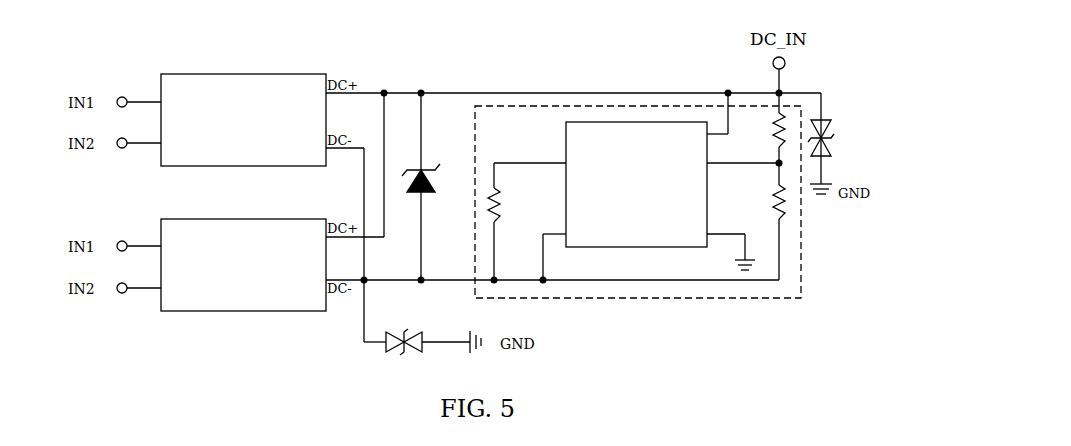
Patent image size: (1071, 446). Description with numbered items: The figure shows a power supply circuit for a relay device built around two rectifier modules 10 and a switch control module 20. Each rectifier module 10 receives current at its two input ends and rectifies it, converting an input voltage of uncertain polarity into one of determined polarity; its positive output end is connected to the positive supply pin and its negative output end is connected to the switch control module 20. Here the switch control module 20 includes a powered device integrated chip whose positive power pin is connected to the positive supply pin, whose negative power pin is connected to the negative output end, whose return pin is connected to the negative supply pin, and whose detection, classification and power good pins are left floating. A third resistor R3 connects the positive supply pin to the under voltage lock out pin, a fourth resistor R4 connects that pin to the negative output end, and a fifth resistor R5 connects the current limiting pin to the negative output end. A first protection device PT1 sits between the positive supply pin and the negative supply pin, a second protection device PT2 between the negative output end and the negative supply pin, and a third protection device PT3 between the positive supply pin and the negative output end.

The rectifier module 10 is at (243, 192).
The switch control module 20 is at (638, 195).
The third resistor R3 is at (765, 128).
The fourth resistor R4 is at (765, 221).
The fifth resistor R5 is at (506, 221).
The first protection device PT1 is at (839, 143).
The second protection device PT2 is at (417, 333).
The third protection device PT3 is at (426, 186).